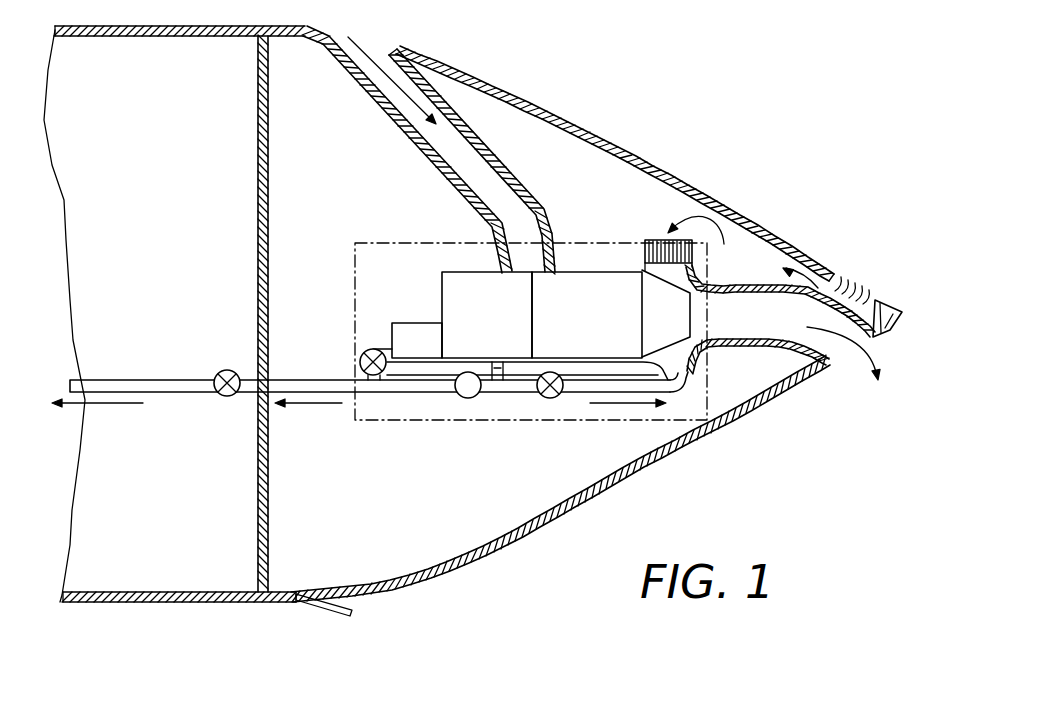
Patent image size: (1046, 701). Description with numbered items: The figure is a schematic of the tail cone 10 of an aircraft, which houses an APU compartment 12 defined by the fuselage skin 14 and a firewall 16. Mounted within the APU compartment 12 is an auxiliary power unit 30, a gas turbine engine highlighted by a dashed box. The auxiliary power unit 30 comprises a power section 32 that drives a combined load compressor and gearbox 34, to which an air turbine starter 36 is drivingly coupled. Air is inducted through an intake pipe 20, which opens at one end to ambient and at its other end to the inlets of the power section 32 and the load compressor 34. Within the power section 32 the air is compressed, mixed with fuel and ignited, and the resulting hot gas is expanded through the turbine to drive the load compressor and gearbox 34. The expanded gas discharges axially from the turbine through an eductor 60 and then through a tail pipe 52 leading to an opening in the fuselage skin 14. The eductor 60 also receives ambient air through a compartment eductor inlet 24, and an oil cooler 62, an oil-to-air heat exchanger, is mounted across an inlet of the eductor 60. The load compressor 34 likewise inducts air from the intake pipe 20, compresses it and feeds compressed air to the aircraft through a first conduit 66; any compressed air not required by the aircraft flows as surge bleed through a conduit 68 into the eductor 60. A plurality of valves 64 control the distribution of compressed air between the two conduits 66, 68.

The tail cone 10 is at (258, 622).
The APU compartment 12 is at (340, 167).
The fuselage skin 14 is at (426, 570).
The firewall 16 is at (258, 153).
The intake pipe 20 is at (390, 62).
The compartment eductor inlet 24 is at (853, 285).
The auxiliary power unit 30 is at (357, 246).
The power section 32 is at (583, 258).
The load compressor and gearbox 34 is at (442, 275).
The air turbine starter 36 is at (422, 323).
The tail pipe 52 is at (830, 356).
The eductor 60 is at (690, 366).
The oil cooler 62 is at (657, 240).
The valves 64 is at (220, 369).
The first conduit 66 is at (330, 380).
The conduit 68 is at (597, 394).